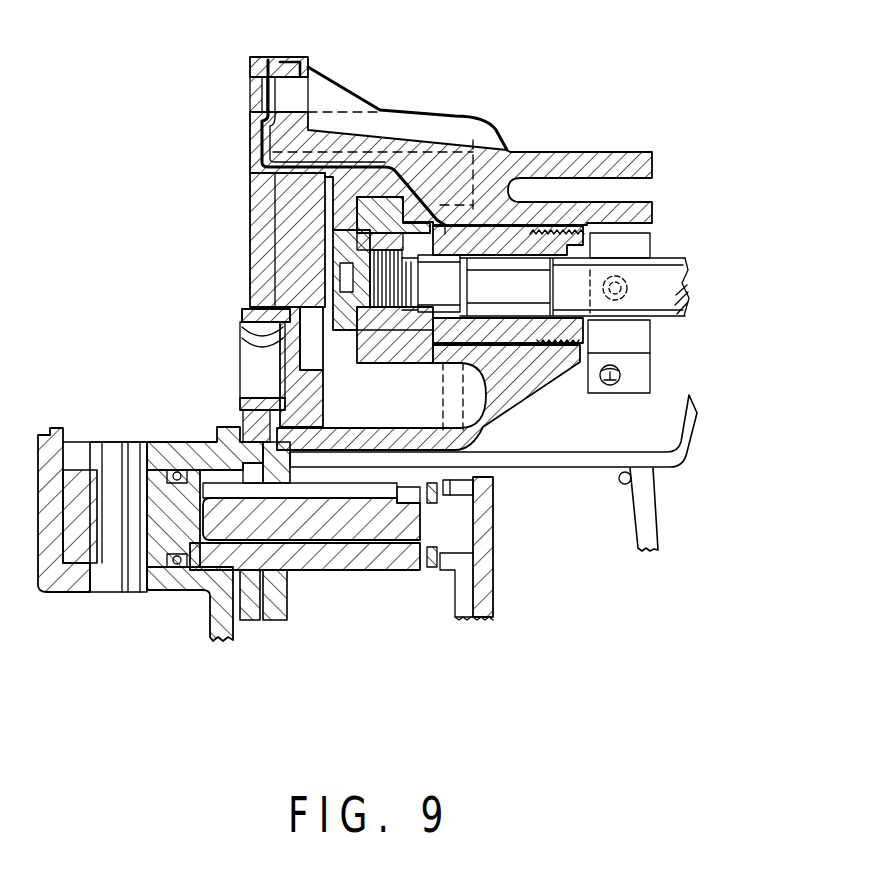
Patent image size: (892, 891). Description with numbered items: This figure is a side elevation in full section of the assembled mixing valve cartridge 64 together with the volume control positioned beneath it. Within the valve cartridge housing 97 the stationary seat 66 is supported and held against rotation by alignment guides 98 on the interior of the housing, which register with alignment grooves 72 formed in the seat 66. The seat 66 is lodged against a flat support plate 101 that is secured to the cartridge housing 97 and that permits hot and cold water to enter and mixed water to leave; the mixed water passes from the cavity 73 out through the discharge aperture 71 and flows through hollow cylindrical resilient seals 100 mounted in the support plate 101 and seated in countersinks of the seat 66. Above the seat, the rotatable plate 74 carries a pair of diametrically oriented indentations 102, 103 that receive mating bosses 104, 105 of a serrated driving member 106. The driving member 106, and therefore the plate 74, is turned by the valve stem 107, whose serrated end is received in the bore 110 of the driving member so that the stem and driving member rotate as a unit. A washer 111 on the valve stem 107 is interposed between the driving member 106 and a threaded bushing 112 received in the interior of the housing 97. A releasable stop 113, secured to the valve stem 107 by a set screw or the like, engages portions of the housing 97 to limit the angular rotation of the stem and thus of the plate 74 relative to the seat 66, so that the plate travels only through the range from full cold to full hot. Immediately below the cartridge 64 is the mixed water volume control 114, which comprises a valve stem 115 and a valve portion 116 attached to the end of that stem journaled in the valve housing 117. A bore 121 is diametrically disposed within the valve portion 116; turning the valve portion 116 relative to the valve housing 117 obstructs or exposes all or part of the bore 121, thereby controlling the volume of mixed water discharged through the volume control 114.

The mixing valve cartridge 64 is at (486, 110).
The stationary seat 66 is at (248, 234).
The discharge aperture 71 is at (250, 348).
The alignment grooves 72 is at (353, 157).
The cavity 73 is at (240, 318).
The rotatable plate 74 is at (334, 380).
The valve cartridge housing 97 is at (487, 154).
The alignment guide 98 is at (380, 203).
The resilient seal 100 is at (250, 395).
The support plate 101 is at (252, 207).
The indentation 102 is at (367, 373).
The indentation 103 is at (380, 152).
The boss 104 is at (380, 365).
The boss 105 is at (263, 176).
The serrated driving member 106 is at (395, 343).
The valve stem 107 is at (648, 283).
The bore 110 is at (385, 305).
The washer 111 is at (440, 232).
The threaded bushing 112 is at (548, 235).
The releasable stop 113 is at (598, 343).
The mixed water volume control 114 is at (327, 580).
The valve stem 115 is at (363, 530).
The valve portion 116 is at (182, 598).
The valve housing 117 is at (197, 597).
The bore 121 is at (137, 500).